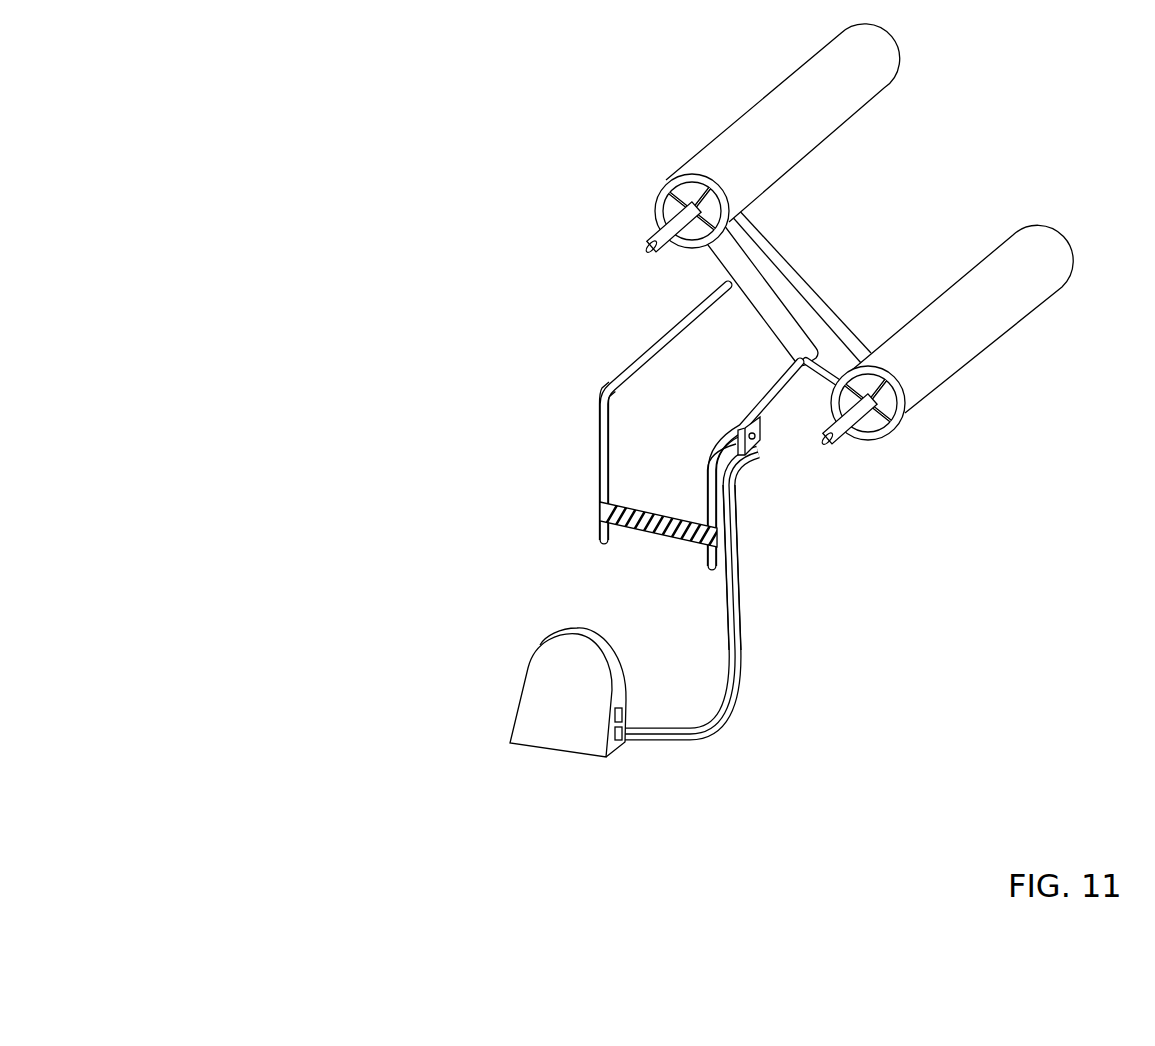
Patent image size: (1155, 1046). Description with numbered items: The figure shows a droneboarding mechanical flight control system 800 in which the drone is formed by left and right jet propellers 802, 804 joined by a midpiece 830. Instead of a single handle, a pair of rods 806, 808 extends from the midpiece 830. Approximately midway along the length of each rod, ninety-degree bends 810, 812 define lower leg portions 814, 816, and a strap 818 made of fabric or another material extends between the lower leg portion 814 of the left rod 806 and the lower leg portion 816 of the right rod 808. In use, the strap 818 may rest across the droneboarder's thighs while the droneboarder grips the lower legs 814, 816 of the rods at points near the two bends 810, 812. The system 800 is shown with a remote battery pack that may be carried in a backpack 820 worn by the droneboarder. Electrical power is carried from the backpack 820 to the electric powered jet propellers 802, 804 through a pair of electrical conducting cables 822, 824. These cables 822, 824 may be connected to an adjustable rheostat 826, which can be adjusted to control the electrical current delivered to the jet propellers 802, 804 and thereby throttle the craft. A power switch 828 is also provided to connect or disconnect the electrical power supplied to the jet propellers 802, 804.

The droneboarding mechanical flight control system 800 is at (370, 297).
The left jet propeller 802 is at (767, 97).
The right jet propeller 804 is at (928, 310).
The left rod 806 is at (670, 323).
The right rod 808 is at (758, 398).
The 90° bend 810 is at (602, 380).
The 90° bend 812 is at (710, 448).
The lower leg portion 814 is at (598, 445).
The lower leg portion 816 is at (708, 503).
The strap 818 is at (632, 535).
The backpack 820 is at (525, 670).
The electrical conducting cable 822 is at (727, 656).
The electrical conducting cable 824 is at (742, 620).
The adjustable rheostat 826 is at (762, 430).
The power switch 828 is at (737, 433).
The midpiece 830 is at (777, 245).